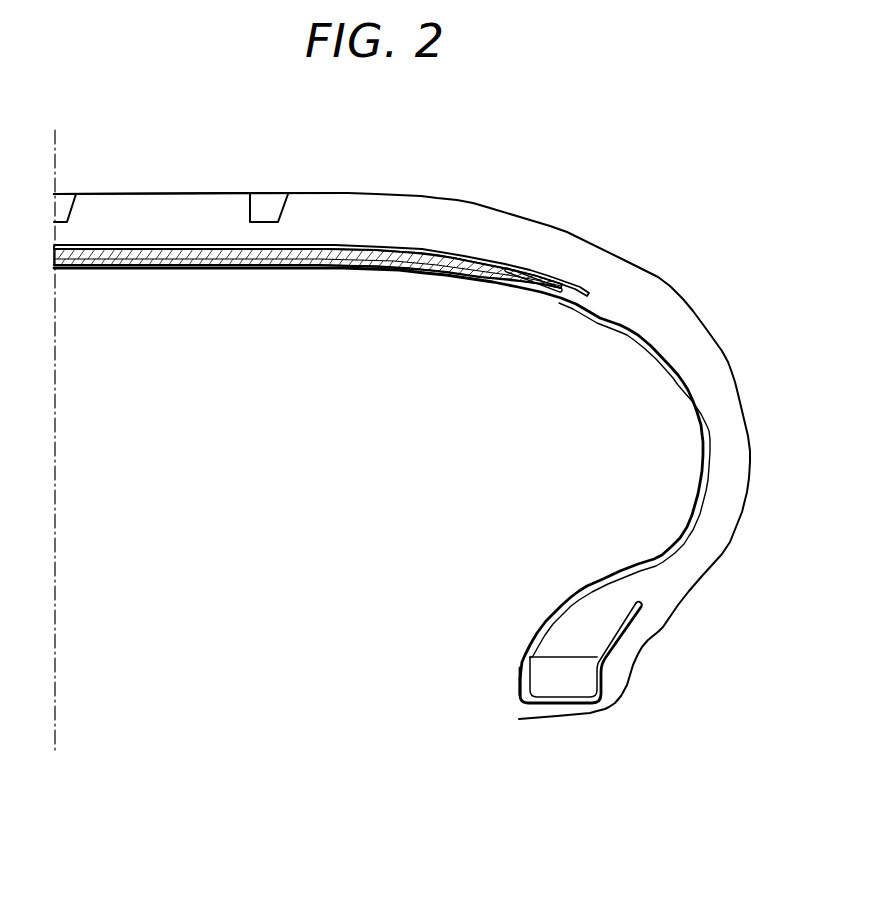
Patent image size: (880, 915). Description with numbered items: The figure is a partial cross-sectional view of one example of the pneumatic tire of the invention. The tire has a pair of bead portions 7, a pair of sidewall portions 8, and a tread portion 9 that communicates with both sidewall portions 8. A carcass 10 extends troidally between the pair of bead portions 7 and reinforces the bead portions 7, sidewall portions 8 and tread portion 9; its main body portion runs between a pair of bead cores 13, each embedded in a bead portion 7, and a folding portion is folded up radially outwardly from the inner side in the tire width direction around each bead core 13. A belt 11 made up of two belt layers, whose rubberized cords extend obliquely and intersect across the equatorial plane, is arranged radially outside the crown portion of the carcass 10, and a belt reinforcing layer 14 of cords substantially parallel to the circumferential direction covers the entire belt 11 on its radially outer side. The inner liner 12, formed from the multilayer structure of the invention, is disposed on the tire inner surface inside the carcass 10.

The bead portion 7 is at (640, 647).
The sidewall portion 8 is at (723, 347).
The tread portion 9 is at (143, 194).
The carcass 10 is at (627, 327).
The belt 11 is at (334, 249).
The inner liner 12 is at (552, 614).
The bead core 13 is at (562, 683).
The belt reinforcing layer 14 is at (488, 260).